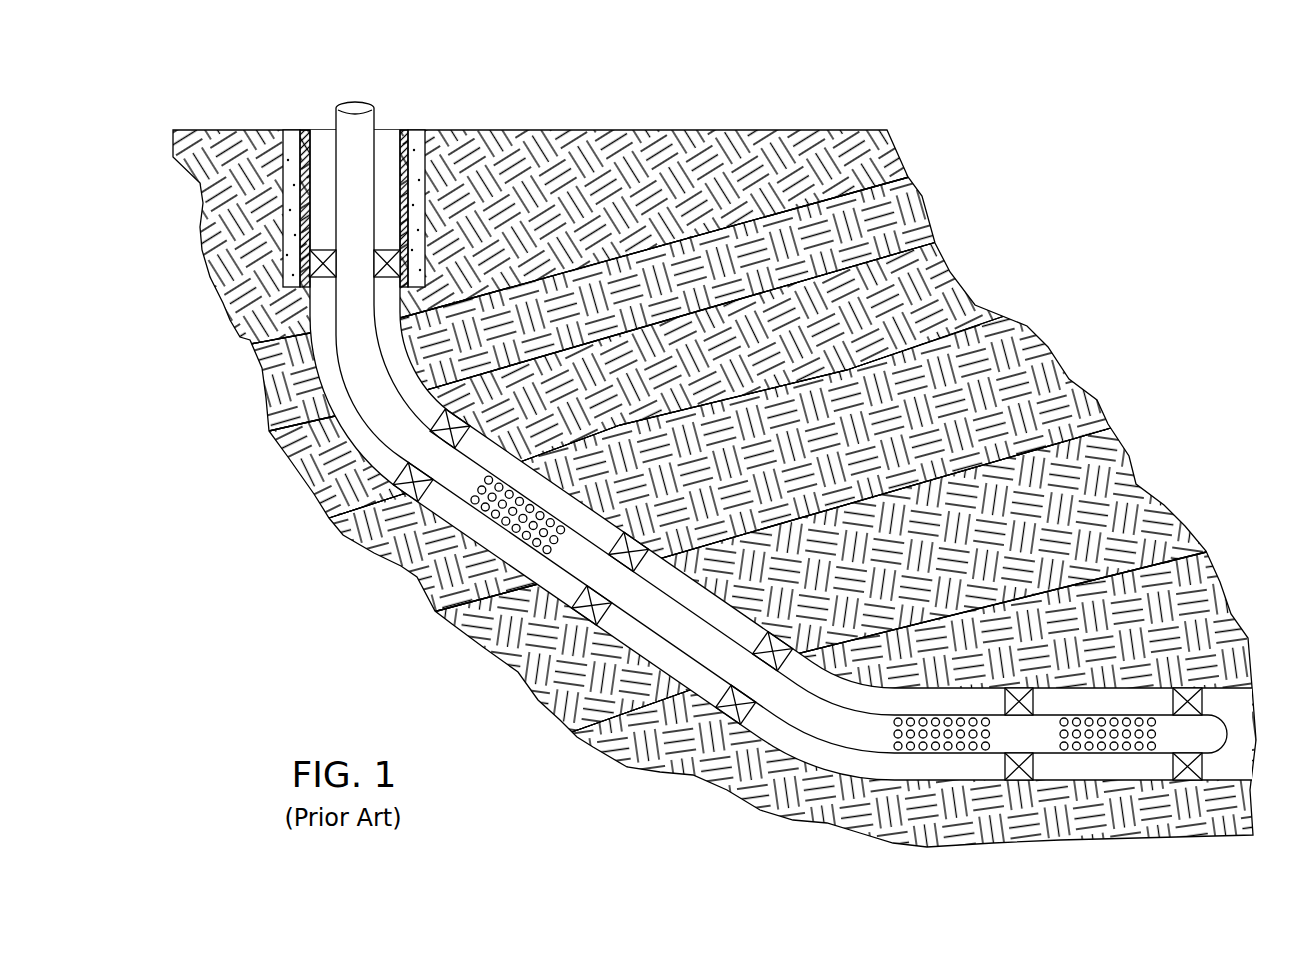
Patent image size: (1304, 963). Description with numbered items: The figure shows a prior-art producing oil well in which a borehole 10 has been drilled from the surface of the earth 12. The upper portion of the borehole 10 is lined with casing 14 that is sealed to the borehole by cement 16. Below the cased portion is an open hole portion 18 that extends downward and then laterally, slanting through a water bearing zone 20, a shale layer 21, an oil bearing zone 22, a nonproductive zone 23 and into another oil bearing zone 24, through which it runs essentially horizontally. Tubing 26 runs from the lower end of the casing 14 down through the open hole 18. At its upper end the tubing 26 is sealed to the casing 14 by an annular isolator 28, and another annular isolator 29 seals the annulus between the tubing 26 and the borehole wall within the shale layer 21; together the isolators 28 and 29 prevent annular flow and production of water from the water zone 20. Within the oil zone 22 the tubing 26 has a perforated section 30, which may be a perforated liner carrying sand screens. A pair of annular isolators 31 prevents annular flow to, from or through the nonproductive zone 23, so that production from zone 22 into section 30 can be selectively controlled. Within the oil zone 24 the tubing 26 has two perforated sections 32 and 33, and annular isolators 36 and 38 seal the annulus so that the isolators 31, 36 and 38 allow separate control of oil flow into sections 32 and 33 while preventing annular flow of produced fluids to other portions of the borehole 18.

The borehole 10 is at (250, 216).
The surface of the earth 12 is at (578, 130).
The casing 14 is at (317, 130).
The cement 16 is at (417, 130).
The open hole portion 18 is at (308, 346).
The water bearing zone 20 is at (603, 305).
The shale layer 21 is at (689, 372).
The oil bearing zone 22 is at (748, 467).
The nonproductive zone 23 is at (902, 560).
The oil bearing zone 24 is at (1127, 638).
The tubing 26 is at (338, 378).
The annular isolator 28 is at (323, 277).
The annular isolator 29 is at (403, 482).
The perforated section 30 is at (495, 517).
The annular isolators 31 is at (578, 607).
The perforated section 32 is at (937, 752).
The perforated section 33 is at (1105, 752).
The annular isolator 36 is at (1010, 770).
The annular isolator 38 is at (1205, 770).